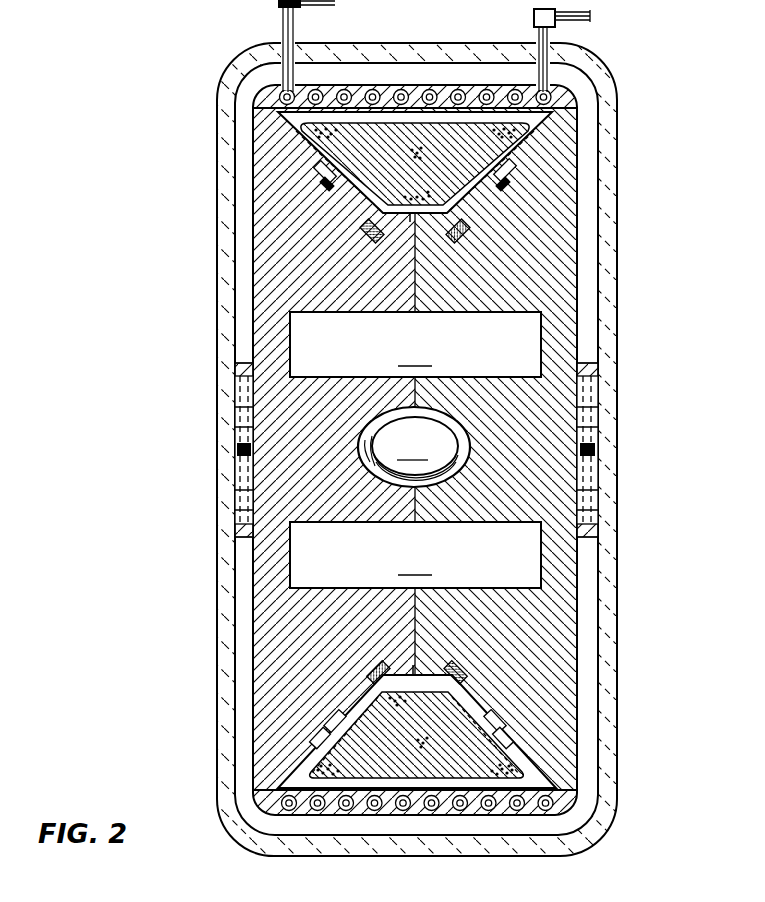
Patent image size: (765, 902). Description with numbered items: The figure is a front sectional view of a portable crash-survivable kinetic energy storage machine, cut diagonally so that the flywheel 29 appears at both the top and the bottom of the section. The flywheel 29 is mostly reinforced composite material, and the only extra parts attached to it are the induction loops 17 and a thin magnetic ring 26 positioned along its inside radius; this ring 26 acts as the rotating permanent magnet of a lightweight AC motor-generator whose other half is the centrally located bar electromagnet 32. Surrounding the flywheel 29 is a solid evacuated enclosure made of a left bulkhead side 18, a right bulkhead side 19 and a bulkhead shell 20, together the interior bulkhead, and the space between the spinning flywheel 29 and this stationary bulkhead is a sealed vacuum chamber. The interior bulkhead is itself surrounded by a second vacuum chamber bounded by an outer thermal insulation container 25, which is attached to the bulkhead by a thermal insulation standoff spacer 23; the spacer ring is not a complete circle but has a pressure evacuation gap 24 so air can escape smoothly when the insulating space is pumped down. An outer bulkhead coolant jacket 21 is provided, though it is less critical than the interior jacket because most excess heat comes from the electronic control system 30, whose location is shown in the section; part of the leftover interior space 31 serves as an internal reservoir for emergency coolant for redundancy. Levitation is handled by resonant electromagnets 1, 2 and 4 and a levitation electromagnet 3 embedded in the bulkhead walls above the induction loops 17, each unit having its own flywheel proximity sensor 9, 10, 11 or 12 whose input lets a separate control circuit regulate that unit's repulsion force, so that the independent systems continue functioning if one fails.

The resonant electromagnet 1 is at (300, 192).
The resonant electromagnet 2 is at (507, 178).
The levitation electromagnet 3 is at (510, 724).
The resonant electromagnet 4 is at (318, 726).
The flywheel proximity sensor 9 is at (366, 234).
The flywheel proximity sensor 10 is at (462, 224).
The flywheel proximity sensor 11 is at (458, 681).
The flywheel proximity sensor 12 is at (352, 679).
The induction loops 17 is at (327, 174).
The left bulkhead side 18 is at (275, 637).
The right bulkhead side 19 is at (555, 672).
The bulkhead shell 20 is at (562, 98).
The outer bulkhead coolant jacket 21 is at (400, 97).
The thermal insulation standoff spacer 23 is at (243, 468).
The pressure evacuation gap 24 is at (240, 447).
The outer thermal insulation container 25 is at (617, 323).
The thin magnetic ring 26 is at (408, 216).
The flywheel 29 is at (322, 137).
The electronic control system 30 is at (415, 344).
The leftover interior space 31 is at (415, 555).
The bar electromagnet 32 is at (414, 447).